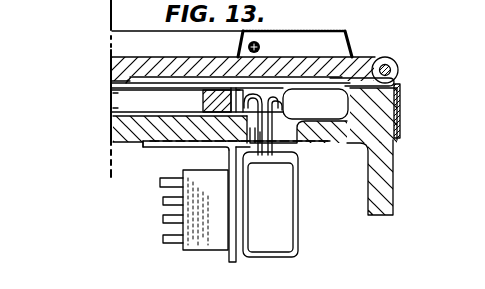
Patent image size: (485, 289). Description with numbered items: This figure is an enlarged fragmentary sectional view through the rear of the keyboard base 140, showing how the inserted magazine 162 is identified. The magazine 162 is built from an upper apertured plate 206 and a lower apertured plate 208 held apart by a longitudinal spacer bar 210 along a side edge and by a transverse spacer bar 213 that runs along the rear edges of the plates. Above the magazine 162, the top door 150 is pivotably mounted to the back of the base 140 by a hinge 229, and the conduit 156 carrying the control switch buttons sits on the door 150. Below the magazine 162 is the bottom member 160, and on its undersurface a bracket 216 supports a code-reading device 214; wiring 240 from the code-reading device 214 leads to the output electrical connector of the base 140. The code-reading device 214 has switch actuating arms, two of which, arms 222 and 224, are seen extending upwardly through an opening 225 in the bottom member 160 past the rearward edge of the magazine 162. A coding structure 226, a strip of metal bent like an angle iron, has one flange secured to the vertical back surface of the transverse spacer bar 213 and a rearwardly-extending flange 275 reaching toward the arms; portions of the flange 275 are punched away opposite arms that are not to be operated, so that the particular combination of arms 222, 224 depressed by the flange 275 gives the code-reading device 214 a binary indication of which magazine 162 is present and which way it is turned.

The base 140 is at (393, 181).
The top door 150 is at (111, 67).
The conduit 156 is at (350, 40).
The bottom member 160 is at (118, 130).
The magazine 162 is at (112, 100).
The upper apertured plate 206 is at (151, 82).
The lower apertured plate 208 is at (147, 117).
The longitudinal spacer bar 210 is at (392, 104).
The transverse spacer bar 213 is at (203, 100).
The code-reading device 214 is at (283, 219).
The bracket 216 is at (234, 262).
The switch actuating arm 222 is at (285, 138).
The switch actuating arm 224 is at (270, 207).
The opening 225 is at (297, 130).
The coding structure 226 is at (251, 88).
The hinge 229 is at (399, 70).
The wiring 240 is at (165, 222).
The rearwardly-extending flange 275 is at (250, 98).